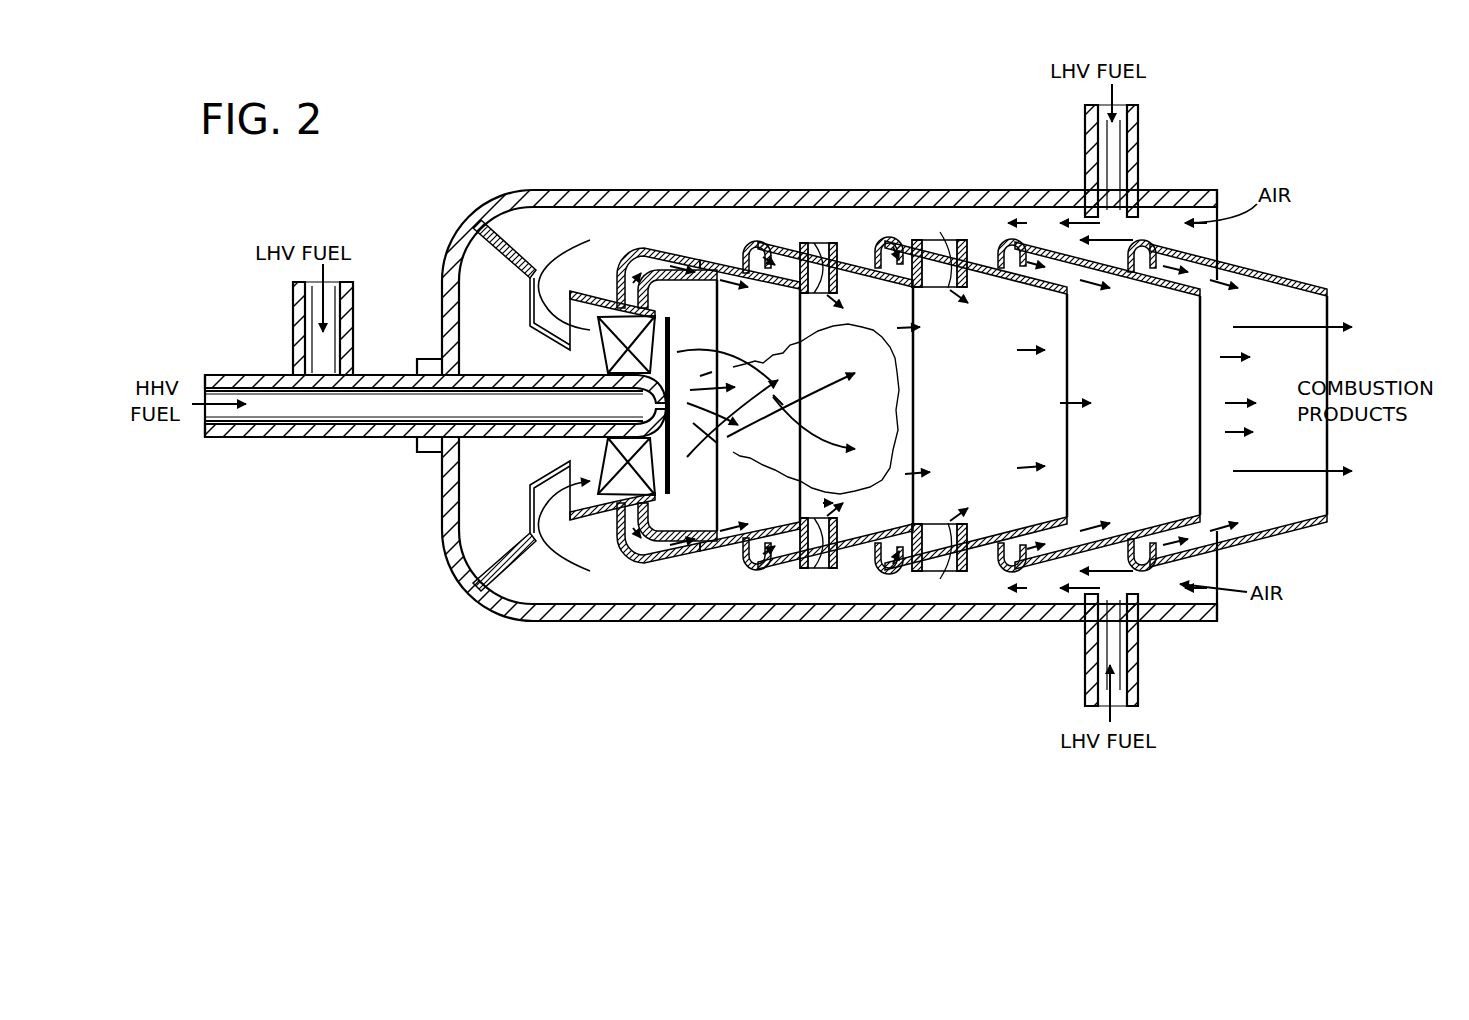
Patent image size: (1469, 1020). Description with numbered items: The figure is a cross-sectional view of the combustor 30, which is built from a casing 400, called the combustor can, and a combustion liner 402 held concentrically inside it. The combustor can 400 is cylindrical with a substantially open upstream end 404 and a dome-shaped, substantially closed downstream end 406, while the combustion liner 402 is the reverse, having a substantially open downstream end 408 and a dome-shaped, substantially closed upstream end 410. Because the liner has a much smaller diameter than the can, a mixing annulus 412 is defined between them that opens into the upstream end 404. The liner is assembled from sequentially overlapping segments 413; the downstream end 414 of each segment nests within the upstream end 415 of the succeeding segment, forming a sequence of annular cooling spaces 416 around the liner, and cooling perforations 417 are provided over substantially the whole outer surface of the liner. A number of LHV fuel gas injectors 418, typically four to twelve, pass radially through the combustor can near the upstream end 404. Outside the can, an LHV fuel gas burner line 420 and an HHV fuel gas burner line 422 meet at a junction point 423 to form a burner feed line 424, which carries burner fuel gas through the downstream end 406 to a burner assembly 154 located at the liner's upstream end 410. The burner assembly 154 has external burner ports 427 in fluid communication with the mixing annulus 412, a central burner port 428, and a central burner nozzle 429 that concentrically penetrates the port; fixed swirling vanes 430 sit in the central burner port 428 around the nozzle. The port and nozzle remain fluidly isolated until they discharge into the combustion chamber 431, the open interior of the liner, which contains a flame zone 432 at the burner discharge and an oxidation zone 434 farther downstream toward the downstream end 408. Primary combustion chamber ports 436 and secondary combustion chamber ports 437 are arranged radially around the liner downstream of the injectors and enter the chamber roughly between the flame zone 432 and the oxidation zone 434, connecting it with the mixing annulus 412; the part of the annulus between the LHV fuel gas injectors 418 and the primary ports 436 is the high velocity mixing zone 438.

The combustor 30 is at (746, 115).
The burner assembly 154 is at (612, 298).
The casing 400 is at (605, 189).
The combustion liner 402 is at (1237, 260).
The upstream end 404 is at (1203, 190).
The downstream end 406 is at (465, 590).
The downstream end 408 is at (1257, 267).
The upstream end 410 is at (640, 558).
The mixing annulus 412 is at (977, 228).
The segments 413 is at (730, 562).
The downstream end 414 is at (768, 532).
The upstream end 415 is at (792, 570).
The annular cooling spaces 416 is at (742, 575).
The cooling perforations 417 is at (766, 578).
The LHV fuel gas injectors 418 is at (1140, 145).
The LHV fuel gas burner line 420 is at (352, 298).
The HHV fuel gas burner line 422 is at (268, 375).
The junction point 423 is at (294, 373).
The burner feed line 424 is at (392, 375).
The external burner ports 427 is at (560, 284).
The central burner port 428 is at (660, 284).
The central burner nozzle 429 is at (677, 418).
The fixed swirling vanes 430 is at (605, 348).
The combustion chamber 431 is at (932, 424).
The flame zone 432 is at (770, 368).
The oxidation zone 434 is at (1097, 398).
The primary combustion chamber ports 436 is at (910, 240).
The secondary combustion chamber ports 437 is at (818, 270).
The high velocity mixing zone 438 is at (1040, 217).